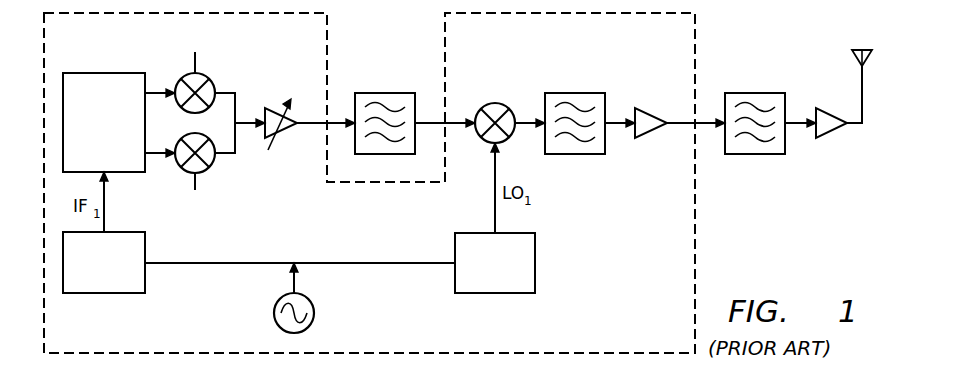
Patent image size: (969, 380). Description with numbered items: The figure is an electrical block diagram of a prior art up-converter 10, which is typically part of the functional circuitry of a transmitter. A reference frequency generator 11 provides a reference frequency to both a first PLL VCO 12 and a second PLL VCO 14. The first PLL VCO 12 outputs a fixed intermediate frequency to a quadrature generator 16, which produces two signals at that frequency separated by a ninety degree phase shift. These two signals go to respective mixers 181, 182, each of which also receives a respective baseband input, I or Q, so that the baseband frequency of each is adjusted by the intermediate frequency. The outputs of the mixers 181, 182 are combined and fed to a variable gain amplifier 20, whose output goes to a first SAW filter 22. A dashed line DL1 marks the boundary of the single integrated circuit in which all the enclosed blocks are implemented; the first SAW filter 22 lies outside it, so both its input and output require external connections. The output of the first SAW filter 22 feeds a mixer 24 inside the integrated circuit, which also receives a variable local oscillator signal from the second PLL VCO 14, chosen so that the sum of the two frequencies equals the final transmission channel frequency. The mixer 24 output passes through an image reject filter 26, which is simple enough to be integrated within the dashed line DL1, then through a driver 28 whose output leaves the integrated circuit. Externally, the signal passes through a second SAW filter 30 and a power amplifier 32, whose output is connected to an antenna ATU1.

The up-converter 10 is at (724, 41).
The reference frequency generator 11 is at (313, 316).
The first PLL VCO 12 is at (104, 293).
The second PLL VCO 14 is at (496, 293).
The quadrature generator 16 is at (103, 73).
The mixer 181 is at (211, 78).
The mixer 182 is at (211, 168).
The variable gain amplifier 20 is at (280, 139).
The first SAW filter 22 is at (386, 93).
The mixer 24 is at (495, 103).
The image reject filter 26 is at (577, 93).
The driver 28 is at (653, 135).
The second SAW filter 30 is at (765, 155).
The power amplifier 32 is at (832, 136).
The dashed line DL1 is at (695, 222).
The antenna ATU1 is at (862, 80).